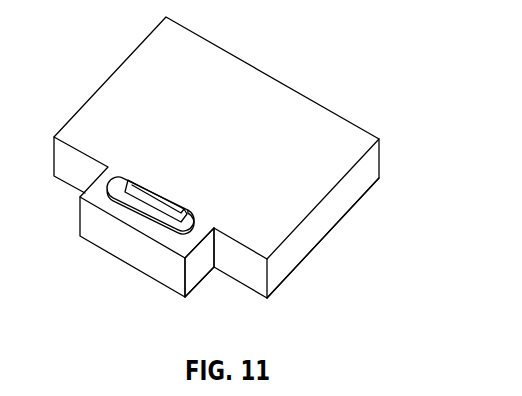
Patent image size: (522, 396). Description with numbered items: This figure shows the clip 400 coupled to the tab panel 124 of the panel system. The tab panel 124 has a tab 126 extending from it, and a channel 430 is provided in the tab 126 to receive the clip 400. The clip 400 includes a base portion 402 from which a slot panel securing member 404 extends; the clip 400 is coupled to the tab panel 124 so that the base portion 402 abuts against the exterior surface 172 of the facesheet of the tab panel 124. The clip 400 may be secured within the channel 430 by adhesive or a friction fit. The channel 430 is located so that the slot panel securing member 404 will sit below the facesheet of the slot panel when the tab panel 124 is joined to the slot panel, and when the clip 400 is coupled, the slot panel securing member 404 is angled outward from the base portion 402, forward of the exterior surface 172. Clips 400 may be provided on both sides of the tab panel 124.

The tab panel 124 is at (303, 113).
The tab 126 is at (195, 270).
The exterior surface 172 is at (283, 225).
The clip 400 is at (138, 205).
The base portion 402 is at (188, 226).
The slot panel securing member 404 is at (150, 193).
The channel 430 is at (199, 214).